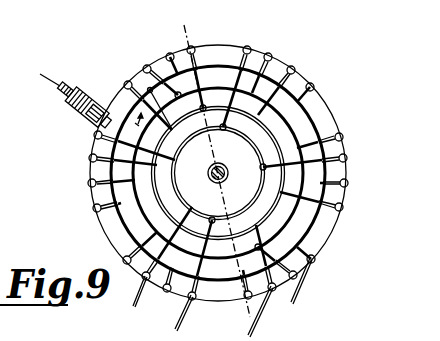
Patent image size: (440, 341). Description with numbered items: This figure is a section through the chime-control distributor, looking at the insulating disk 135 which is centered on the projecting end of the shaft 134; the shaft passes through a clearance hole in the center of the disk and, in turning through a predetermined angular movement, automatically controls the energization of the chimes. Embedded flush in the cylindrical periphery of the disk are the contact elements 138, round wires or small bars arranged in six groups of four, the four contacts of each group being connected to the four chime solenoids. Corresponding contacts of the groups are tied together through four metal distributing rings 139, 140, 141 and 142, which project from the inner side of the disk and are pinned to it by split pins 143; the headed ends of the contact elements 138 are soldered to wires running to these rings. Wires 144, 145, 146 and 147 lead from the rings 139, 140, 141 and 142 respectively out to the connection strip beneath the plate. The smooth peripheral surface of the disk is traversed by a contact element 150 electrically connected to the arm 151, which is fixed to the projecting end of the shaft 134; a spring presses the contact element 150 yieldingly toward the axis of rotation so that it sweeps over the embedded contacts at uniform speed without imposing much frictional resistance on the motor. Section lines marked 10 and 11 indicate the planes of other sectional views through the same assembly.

The section line 10- 10 is at (184, 25).
The section arrow 11 is at (42, 55).
The shaft 134 is at (226, 180).
The insulating disk 135 is at (226, 47).
The contact elements 138 is at (272, 57).
The distributing ring 139 is at (342, 135).
The distributing ring 140 is at (263, 153).
The distributing ring 141 is at (300, 103).
The distributing ring 142 is at (313, 86).
The split pins 143 is at (149, 89).
The wire 144 is at (134, 311).
The wire 145 is at (180, 328).
The wire 146 is at (258, 327).
The wire 147 is at (293, 303).
The contact element 150 is at (92, 122).
The arm 151 is at (95, 97).